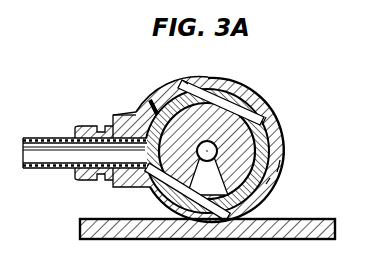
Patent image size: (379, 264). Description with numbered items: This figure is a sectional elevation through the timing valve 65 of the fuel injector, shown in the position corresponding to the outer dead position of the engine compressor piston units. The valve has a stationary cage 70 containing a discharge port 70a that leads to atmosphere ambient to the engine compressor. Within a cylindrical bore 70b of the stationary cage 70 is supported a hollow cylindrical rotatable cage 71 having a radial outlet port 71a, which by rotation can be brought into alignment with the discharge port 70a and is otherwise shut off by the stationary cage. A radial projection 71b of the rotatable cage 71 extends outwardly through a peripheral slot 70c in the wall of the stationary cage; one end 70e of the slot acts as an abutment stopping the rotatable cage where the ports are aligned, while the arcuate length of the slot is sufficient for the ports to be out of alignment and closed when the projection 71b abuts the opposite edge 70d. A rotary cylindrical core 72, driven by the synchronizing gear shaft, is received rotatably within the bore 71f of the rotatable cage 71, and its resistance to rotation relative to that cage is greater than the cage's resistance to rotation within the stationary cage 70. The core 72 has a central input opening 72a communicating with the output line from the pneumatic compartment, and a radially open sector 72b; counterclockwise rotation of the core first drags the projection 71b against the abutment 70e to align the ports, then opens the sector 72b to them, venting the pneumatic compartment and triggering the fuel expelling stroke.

The timing valve 65 is at (291, 213).
The stationary cage 70 is at (237, 91).
The discharge port 70a is at (104, 155).
The cylindrical bore 70b is at (279, 167).
The peripheral slot 70c is at (163, 95).
The edge of slot 70d is at (186, 89).
The end of slot 70e is at (154, 100).
The rotatable cage 71 is at (268, 108).
The radial outlet port 71a is at (150, 112).
The radial projection 71b is at (193, 80).
The bore of rotatable cage 71f is at (270, 179).
The rotary cylindrical core 72 is at (277, 133).
The central input opening 72a is at (273, 118).
The radially open sector 72b is at (160, 200).